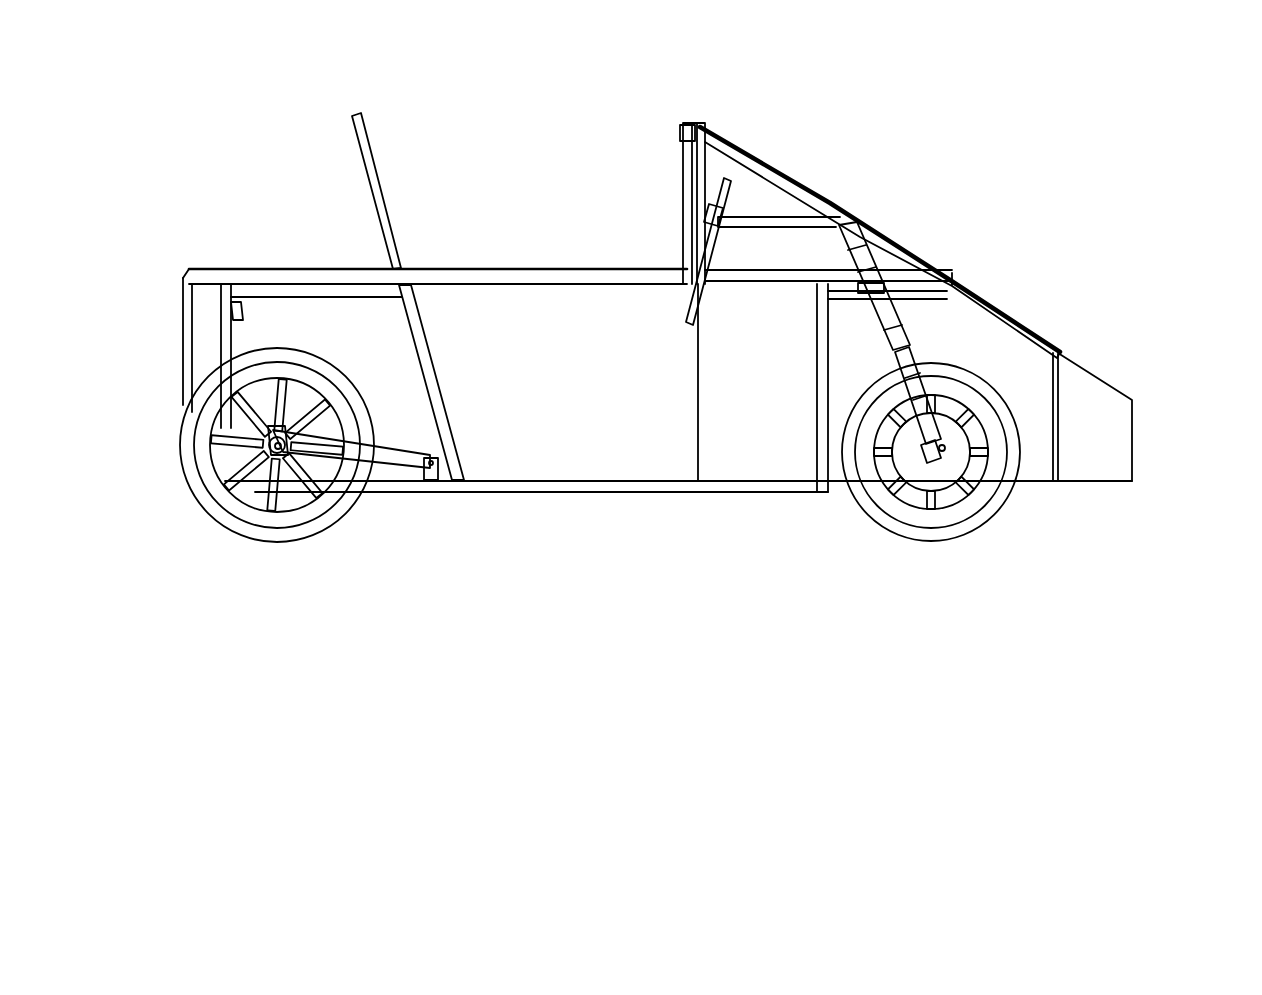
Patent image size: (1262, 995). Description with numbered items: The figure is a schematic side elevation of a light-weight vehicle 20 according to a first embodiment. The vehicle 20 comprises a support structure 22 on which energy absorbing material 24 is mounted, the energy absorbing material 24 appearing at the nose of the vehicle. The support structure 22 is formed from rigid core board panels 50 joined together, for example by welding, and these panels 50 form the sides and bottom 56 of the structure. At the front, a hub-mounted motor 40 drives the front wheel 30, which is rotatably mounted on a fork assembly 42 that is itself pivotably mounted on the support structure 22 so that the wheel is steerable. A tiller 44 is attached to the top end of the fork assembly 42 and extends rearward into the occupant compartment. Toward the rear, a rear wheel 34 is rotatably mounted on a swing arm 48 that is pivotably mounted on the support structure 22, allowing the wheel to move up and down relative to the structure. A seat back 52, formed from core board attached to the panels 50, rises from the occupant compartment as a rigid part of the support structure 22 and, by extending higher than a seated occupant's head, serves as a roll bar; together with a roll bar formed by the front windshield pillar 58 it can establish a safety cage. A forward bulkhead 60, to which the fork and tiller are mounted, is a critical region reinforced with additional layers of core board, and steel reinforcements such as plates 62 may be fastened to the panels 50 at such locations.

The light-weight vehicle 20 is at (869, 80).
The support structure 22 is at (562, 494).
The energy absorbing material 24 is at (1113, 387).
The front wheel 30 is at (933, 545).
The rear wheel 34 is at (283, 548).
The hub-mounted motor 40 is at (905, 500).
The fork assembly 42 is at (908, 353).
The tiller 44 is at (764, 218).
The swing arm 48 is at (392, 490).
The rigid core board panel 50 is at (748, 478).
The seat back 52 is at (385, 200).
The bottom 56 is at (655, 497).
The front windshield pillar 58 is at (735, 133).
The forward bulkhead 60 is at (728, 268).
The plate 62 is at (903, 310).